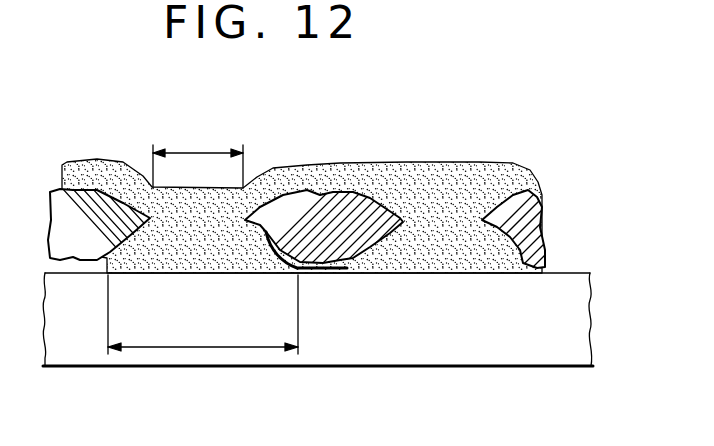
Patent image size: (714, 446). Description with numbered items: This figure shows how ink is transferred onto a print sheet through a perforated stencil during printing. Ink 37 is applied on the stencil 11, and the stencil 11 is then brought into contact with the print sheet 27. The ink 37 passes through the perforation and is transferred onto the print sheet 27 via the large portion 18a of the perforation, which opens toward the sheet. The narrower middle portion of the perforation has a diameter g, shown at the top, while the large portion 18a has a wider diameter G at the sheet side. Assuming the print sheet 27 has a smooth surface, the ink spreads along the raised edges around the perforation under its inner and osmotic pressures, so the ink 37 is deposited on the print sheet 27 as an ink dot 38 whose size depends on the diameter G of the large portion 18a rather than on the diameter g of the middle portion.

The ink 37 is at (538, 180).
The stencil 11 is at (538, 223).
The ink dot 38 is at (157, 278).
The large portion of the perforation 18a is at (266, 278).
The print sheet 27 is at (548, 350).
The diameter of the middle portion g is at (192, 153).
The diameter of the large portion G is at (193, 348).